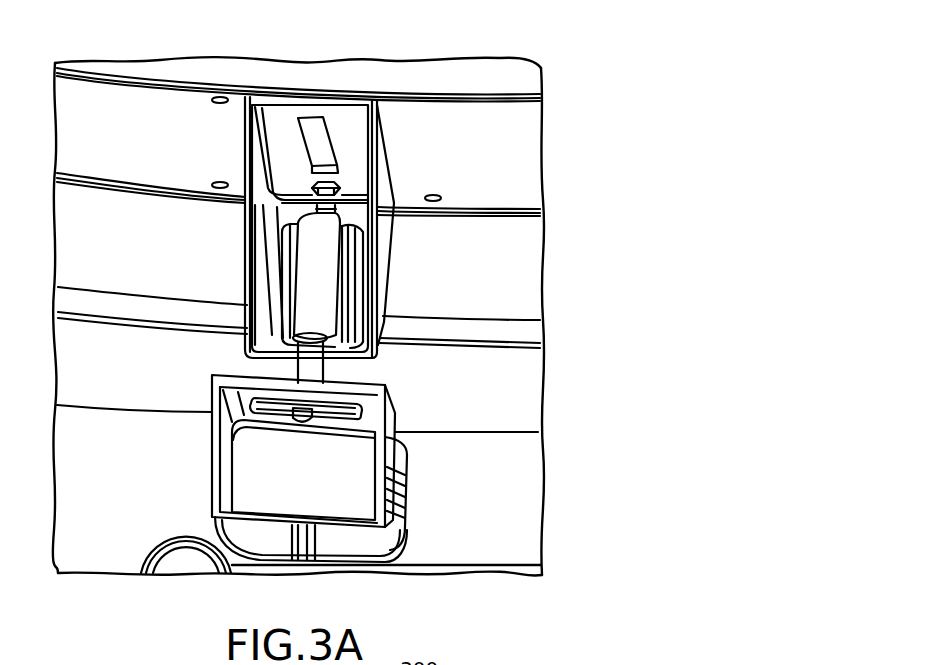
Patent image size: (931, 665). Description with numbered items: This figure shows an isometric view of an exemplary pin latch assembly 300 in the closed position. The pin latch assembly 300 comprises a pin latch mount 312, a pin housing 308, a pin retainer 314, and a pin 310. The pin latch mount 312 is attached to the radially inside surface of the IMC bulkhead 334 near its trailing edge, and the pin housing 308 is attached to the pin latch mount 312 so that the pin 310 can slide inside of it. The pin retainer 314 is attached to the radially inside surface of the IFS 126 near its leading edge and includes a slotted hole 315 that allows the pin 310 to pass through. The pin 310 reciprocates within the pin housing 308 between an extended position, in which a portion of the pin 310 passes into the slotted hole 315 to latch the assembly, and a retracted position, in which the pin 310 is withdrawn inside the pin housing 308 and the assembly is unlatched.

The pin latch assembly 300 is at (344, 86).
The IMC bulkhead 334 is at (525, 143).
The IFS 126 is at (512, 482).
The pin latch mount 312 is at (383, 174).
The pin housing 308 is at (306, 277).
The pin 310 is at (312, 365).
The pin retainer 314 is at (243, 482).
The slotted hole 315 is at (347, 417).